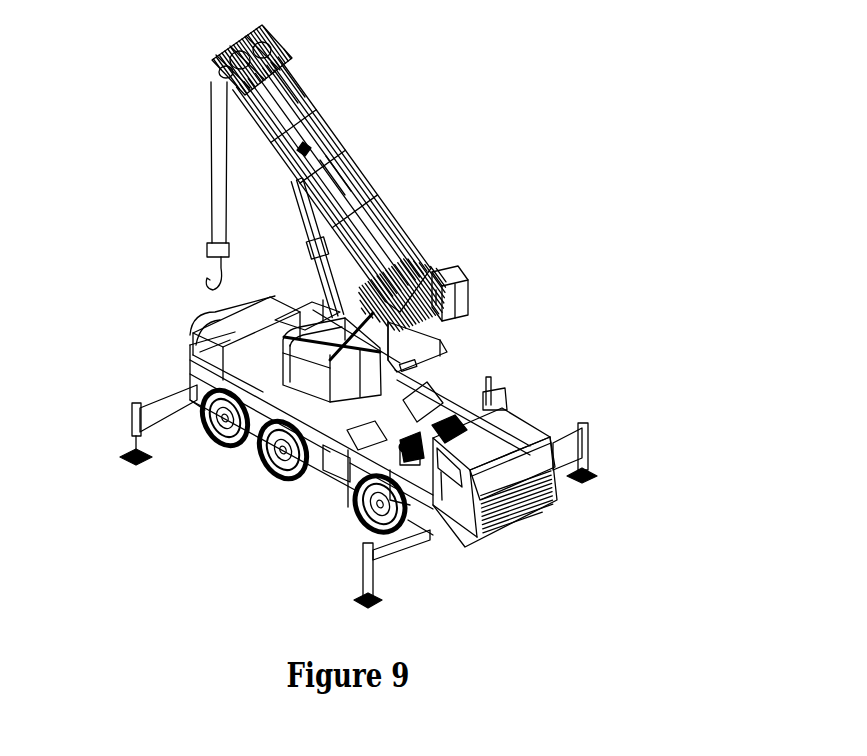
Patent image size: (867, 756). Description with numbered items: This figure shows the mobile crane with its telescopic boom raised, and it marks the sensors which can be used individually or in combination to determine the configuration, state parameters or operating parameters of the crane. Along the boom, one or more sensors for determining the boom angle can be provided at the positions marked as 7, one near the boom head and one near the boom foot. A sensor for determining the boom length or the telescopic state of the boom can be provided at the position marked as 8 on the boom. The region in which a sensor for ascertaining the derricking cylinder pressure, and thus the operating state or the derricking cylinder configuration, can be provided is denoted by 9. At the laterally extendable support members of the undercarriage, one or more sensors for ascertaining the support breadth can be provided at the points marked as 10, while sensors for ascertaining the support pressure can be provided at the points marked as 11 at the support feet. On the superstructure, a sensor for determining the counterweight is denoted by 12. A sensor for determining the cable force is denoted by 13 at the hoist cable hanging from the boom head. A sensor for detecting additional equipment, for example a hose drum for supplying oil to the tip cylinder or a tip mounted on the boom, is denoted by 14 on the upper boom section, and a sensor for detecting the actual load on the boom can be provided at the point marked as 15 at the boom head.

The boom angle sensor position 7 is at (252, 50).
The boom length sensor position 8 is at (345, 185).
The derricking cylinder pressure sensor region 9 is at (335, 380).
The support breadth sensor points 10 is at (160, 410).
The support pressure sensor points 11 is at (138, 459).
The counterweight sensor 12 is at (465, 298).
The cable force sensor 13 is at (228, 118).
The additional equipment sensor 14 is at (285, 90).
The load sensor position 15 is at (215, 72).